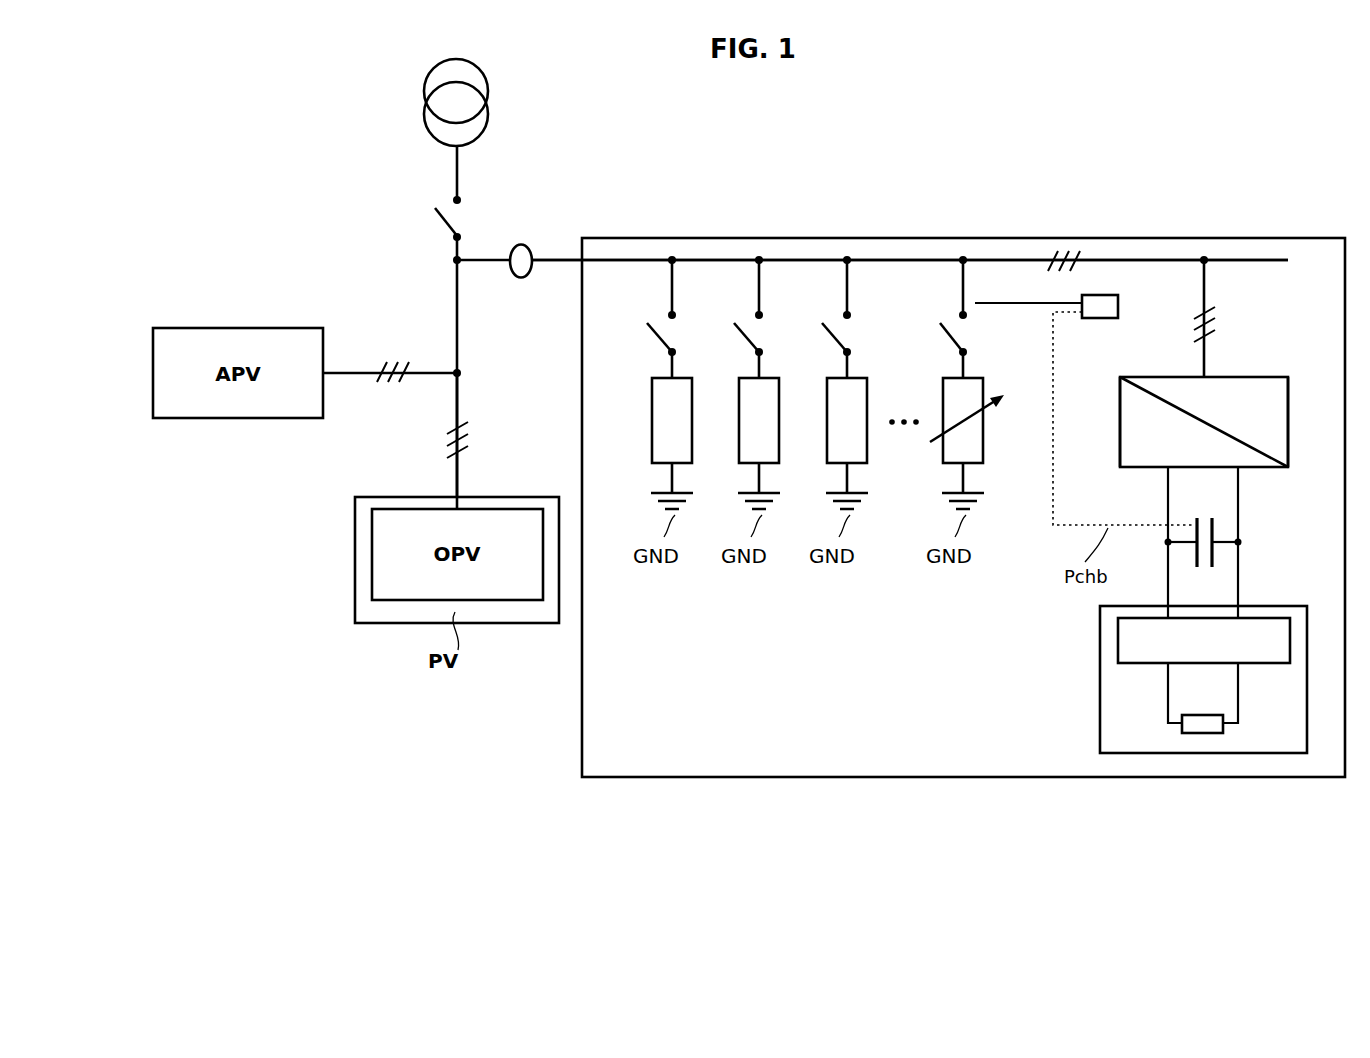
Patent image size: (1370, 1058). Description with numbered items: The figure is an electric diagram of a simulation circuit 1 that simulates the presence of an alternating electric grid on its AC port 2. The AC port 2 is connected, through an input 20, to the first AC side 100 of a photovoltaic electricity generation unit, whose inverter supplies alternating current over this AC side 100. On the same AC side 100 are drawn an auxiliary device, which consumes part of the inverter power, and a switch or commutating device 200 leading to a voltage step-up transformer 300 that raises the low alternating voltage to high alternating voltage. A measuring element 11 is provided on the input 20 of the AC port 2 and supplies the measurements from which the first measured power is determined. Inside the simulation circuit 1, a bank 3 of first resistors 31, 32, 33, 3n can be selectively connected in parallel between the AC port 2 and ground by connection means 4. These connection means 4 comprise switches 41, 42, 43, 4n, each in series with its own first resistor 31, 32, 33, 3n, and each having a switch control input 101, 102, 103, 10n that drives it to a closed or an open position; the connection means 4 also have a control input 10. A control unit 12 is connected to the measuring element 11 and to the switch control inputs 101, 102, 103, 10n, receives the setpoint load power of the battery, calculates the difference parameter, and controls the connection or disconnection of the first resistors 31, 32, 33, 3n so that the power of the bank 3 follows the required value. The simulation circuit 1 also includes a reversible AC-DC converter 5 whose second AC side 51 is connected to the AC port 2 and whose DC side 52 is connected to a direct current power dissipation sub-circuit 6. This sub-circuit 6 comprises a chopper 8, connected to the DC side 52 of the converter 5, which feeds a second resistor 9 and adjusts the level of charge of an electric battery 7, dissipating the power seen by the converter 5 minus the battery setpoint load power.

The simulation circuit 1 is at (1003, 230).
The AC port 2 is at (642, 258).
The bank of first resistors 3 is at (1021, 480).
The connection means 4 is at (984, 332).
The reversible AC-DC converter 5 is at (1241, 366).
The direct current power dissipation sub-circuit 6 is at (1118, 680).
The electric battery 7 is at (1210, 525).
The chopper 8 is at (1130, 637).
The second resistor 9 is at (1205, 722).
The control input 10 is at (1032, 303).
The measuring element 11 is at (521, 245).
The control unit 12 is at (1122, 350).
The input 20 is at (582, 265).
The first resistor 31 is at (691, 403).
The first resistor 32 is at (779, 403).
The first resistor 33 is at (867, 403).
The first resistor 3n is at (975, 442).
The switch 41 is at (657, 340).
The switch 42 is at (745, 340).
The switch 43 is at (833, 340).
The switch 4n is at (949, 338).
The second AC side 51 is at (1289, 428).
The DC side 52 is at (1120, 423).
The first AC side 100 is at (459, 406).
The switch control input 101 is at (662, 303).
The switch control input 102 is at (747, 303).
The switch control input 103 is at (834, 303).
The switch control input 10n is at (950, 303).
The switch or commutating device 200 is at (436, 220).
The voltage step-up transformer 300 is at (489, 108).